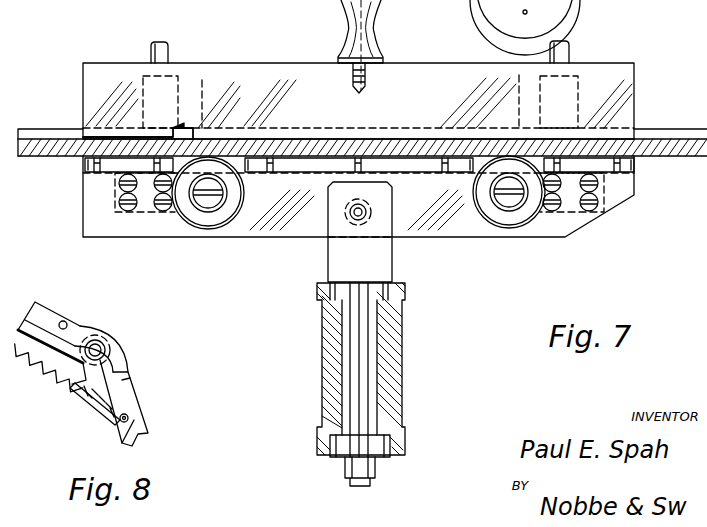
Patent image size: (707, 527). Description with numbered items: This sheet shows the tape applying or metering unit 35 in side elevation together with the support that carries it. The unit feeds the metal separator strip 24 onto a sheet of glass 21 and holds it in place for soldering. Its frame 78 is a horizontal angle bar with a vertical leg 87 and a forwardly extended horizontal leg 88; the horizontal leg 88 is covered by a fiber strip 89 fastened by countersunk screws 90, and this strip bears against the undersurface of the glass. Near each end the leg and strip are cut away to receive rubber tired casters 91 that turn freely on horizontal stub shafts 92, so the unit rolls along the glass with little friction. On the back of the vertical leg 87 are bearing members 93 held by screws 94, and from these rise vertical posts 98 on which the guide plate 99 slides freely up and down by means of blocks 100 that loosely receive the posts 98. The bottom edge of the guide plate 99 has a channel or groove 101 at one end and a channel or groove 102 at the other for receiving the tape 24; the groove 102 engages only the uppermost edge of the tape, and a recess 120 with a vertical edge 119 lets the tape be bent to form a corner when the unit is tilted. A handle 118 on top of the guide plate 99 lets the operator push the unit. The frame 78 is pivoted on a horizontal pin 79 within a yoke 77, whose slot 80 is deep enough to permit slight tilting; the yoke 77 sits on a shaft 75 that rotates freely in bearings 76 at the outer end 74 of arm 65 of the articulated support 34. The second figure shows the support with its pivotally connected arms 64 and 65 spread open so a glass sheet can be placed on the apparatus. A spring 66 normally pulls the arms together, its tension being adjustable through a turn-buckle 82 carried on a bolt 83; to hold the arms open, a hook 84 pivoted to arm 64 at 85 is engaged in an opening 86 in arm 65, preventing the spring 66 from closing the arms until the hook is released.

In FIG. 7, the metering unit 35 is at (328, 82).
In FIG. 7, the channel or groove 102 is at (108, 125).
In FIG. 7, the guide plate 99 is at (470, 65).
In FIG. 7, the vertical posts 98 is at (168, 45).
In FIG. 7, the blocks 100 is at (143, 78).
In FIG. 7, the vertical edge 119 is at (194, 126).
In FIG. 7, the recess 120 is at (182, 127).
In FIG. 7, the handle 118 is at (372, 44).
In FIG. 7, the channel or groove 101 is at (636, 103).
In FIG. 7, the metal separator strip 24 is at (655, 137).
In FIG. 7, the sheet of glass 21 is at (680, 146).
In FIG. 7, the strip 89 is at (305, 160).
In FIG. 7, the horizontal leg 88 is at (361, 160).
In FIG. 7, the countersunk screws 90 is at (434, 139).
In FIG. 7, the vertical leg 87 is at (258, 228).
In FIG. 7, the frame 78 is at (461, 220).
In FIG. 7, the rubber tired casters 91 is at (212, 220).
In FIG. 7, the horizontal stub shafts 92 is at (203, 205).
In FIG. 7, the bearing members 93 is at (117, 193).
In FIG. 7, the screws 94 is at (162, 210).
In FIG. 7, the yoke 77 is at (374, 258).
In FIG. 7, the horizontal pin 79 is at (352, 216).
In FIG. 7, the slot 80 is at (345, 241).
In FIG. 7, the articulated support 34 is at (328, 323).
In FIG. 7, the outer end of arm 74 is at (385, 388).
In FIG. 7, the arm 65 is at (332, 372).
In FIG. 8, the arm 65 is at (136, 422).
In FIG. 7, the shaft 75 is at (362, 358).
In FIG. 7, the bearings 76 is at (370, 292).
In FIG. 8, the arm 64 is at (40, 314).
In FIG. 8, the spring 66 is at (50, 371).
In FIG. 8, the pivotal attachment 85 is at (66, 323).
In FIG. 8, the hook 84 is at (108, 345).
In FIG. 8, the opening 86 is at (132, 377).
In FIG. 8, the turn-buckle 82 is at (89, 398).
In FIG. 8, the bolt 83 is at (122, 421).